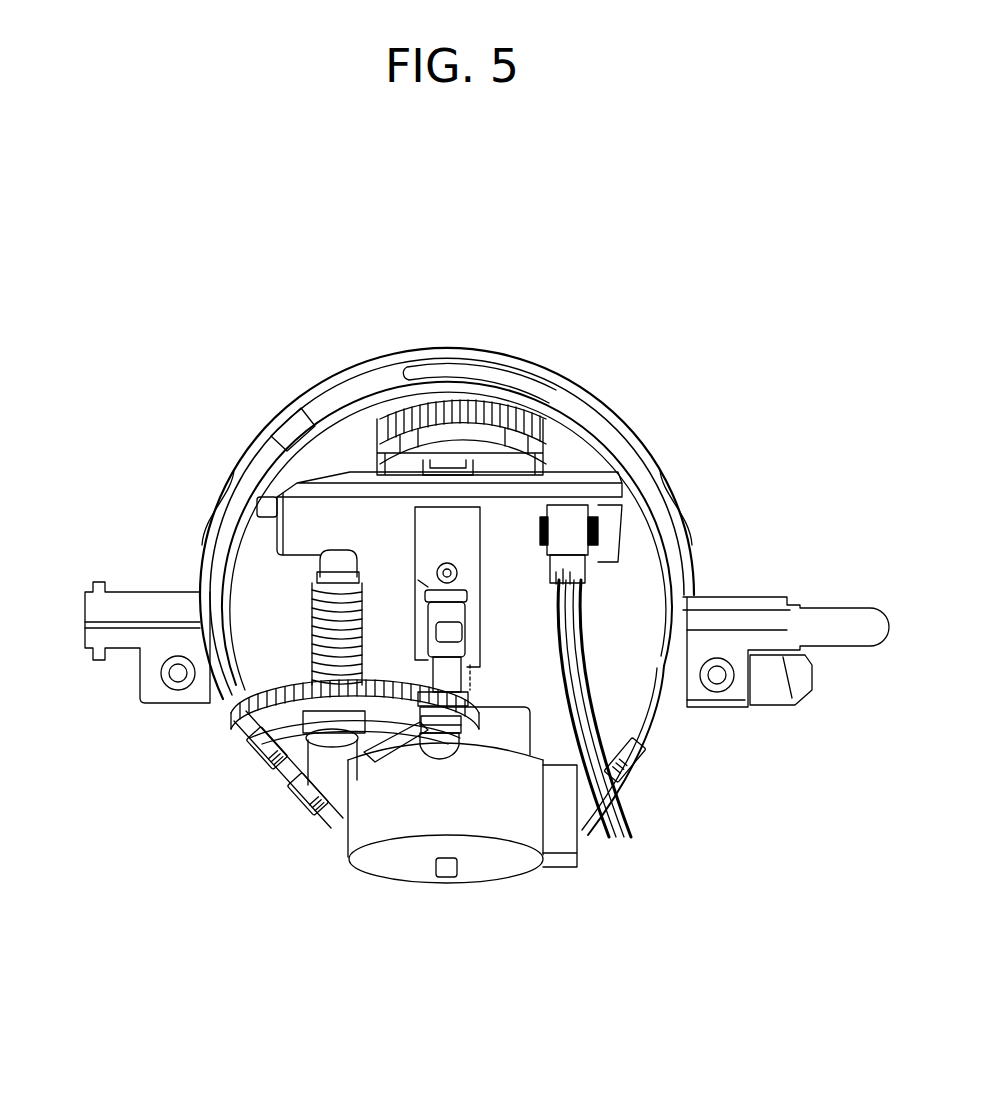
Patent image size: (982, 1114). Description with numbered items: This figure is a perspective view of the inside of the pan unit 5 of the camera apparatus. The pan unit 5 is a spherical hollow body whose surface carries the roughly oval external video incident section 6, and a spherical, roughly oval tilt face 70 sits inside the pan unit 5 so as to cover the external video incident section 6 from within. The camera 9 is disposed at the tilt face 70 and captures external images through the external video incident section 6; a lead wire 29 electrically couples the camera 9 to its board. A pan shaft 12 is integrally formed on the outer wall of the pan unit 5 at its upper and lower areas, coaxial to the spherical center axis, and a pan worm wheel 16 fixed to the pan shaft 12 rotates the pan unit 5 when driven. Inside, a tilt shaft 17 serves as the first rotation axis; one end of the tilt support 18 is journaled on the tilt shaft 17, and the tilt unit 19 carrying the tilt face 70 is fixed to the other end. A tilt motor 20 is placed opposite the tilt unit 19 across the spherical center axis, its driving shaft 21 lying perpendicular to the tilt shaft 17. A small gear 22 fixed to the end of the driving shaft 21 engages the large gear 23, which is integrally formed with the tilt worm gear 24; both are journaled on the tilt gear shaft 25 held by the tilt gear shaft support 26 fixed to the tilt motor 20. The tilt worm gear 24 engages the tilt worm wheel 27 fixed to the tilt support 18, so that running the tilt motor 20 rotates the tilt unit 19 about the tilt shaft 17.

The pan unit 5 is at (290, 353).
The external video incident section 6 is at (460, 372).
The camera 9 is at (300, 398).
The pan shaft 12 is at (100, 608).
The pan worm wheel 16 is at (772, 695).
The tilt shaft 17 is at (437, 575).
The tilt support 18 is at (452, 530).
The tilt unit 19 is at (513, 513).
The tilt motor 20 is at (417, 807).
The driving shaft 21 is at (398, 755).
The tilt small gear 22 is at (467, 743).
The tilt large gear 23 is at (252, 722).
The tilt worm gear 24 is at (317, 626).
The tilt gear shaft 25 is at (338, 572).
The tilt gear shaft support 26 is at (292, 800).
The tilt worm wheel 27 is at (335, 765).
The lead wire 29 is at (606, 795).
The tilt face 70 is at (410, 400).